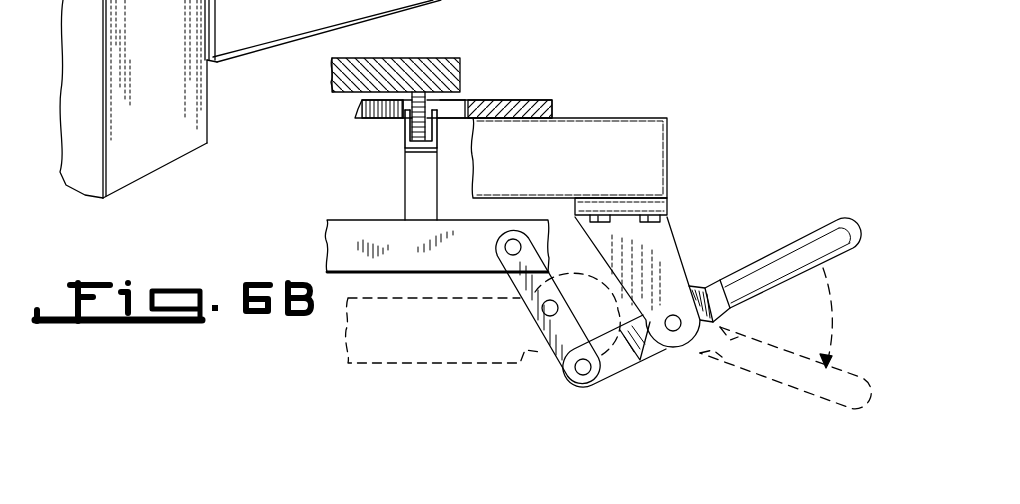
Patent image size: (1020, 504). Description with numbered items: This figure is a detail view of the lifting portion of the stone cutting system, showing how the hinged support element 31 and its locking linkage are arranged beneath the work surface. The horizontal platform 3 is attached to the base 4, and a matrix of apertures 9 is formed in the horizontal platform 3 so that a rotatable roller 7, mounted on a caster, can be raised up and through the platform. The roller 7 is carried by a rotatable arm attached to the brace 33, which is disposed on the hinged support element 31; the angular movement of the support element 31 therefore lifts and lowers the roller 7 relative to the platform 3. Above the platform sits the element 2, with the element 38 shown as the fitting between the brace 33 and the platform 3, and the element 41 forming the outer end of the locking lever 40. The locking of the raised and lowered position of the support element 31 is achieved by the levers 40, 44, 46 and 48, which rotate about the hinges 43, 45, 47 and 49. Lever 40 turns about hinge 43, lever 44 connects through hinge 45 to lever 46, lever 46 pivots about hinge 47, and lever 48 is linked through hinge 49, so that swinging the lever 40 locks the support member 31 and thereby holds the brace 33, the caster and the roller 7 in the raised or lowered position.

The workpiece block 2 is at (440, 62).
The horizontal platform 3 is at (555, 105).
The base 4 is at (657, 138).
The rotatable roller 7 is at (440, 99).
The aperture 9 is at (463, 120).
The hinged support element 31 is at (353, 262).
The brace 33 is at (413, 172).
The nut bracket 38 is at (405, 143).
The lever 40 is at (707, 283).
The handle 41 is at (832, 218).
The hinge 43 is at (672, 331).
The lever 44 is at (645, 322).
The hinge 45 is at (578, 375).
The lever 46 is at (560, 347).
The hinge 47 is at (545, 312).
The lever 48 is at (520, 307).
The hinge 49 is at (505, 255).